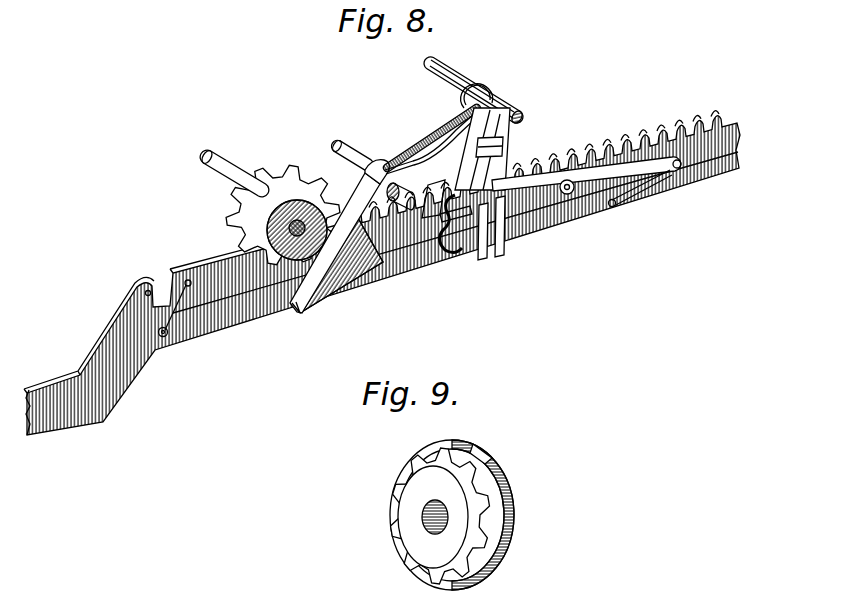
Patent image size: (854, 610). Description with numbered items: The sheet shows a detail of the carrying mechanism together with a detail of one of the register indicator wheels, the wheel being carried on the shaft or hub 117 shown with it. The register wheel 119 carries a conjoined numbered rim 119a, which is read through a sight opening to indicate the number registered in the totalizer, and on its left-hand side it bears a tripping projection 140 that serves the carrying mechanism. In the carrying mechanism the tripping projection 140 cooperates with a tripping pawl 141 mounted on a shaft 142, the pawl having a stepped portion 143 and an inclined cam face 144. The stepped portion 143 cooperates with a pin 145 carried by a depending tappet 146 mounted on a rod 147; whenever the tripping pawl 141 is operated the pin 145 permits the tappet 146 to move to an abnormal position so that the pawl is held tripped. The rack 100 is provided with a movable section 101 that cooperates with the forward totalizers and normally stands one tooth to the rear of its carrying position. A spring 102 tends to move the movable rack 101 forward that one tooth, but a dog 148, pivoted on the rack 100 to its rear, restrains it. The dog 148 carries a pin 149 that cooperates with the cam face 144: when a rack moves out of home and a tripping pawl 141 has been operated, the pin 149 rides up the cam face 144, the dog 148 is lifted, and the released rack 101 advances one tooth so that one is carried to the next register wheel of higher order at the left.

In FIG. 8, the rack 100 is at (113, 395).
In FIG. 8, the movable section 101 is at (203, 272).
In FIG. 8, the spring 102 is at (165, 337).
In FIG. 8, the sprocket wheel with crank handle 117 is at (277, 182).
In FIG. 9, the register indicator wheel 119 is at (390, 492).
In FIG. 9, the numbered rim 119a is at (500, 463).
In FIG. 8, the tripping projection 140 is at (290, 270).
In FIG. 9, the tripping projection 140 is at (490, 562).
In FIG. 8, the tripping pawl 141 is at (303, 312).
In FIG. 8, the shaft 142 is at (369, 162).
In FIG. 8, the stepped portion 143 is at (500, 130).
In FIG. 8, the inclined cam face 144 is at (440, 250).
In FIG. 8, the pin 145 is at (503, 150).
In FIG. 8, the depending tappet 146 is at (500, 238).
In FIG. 8, the rod 147 is at (471, 90).
In FIG. 8, the dog 148 is at (547, 199).
In FIG. 8, the pin 149 is at (437, 184).